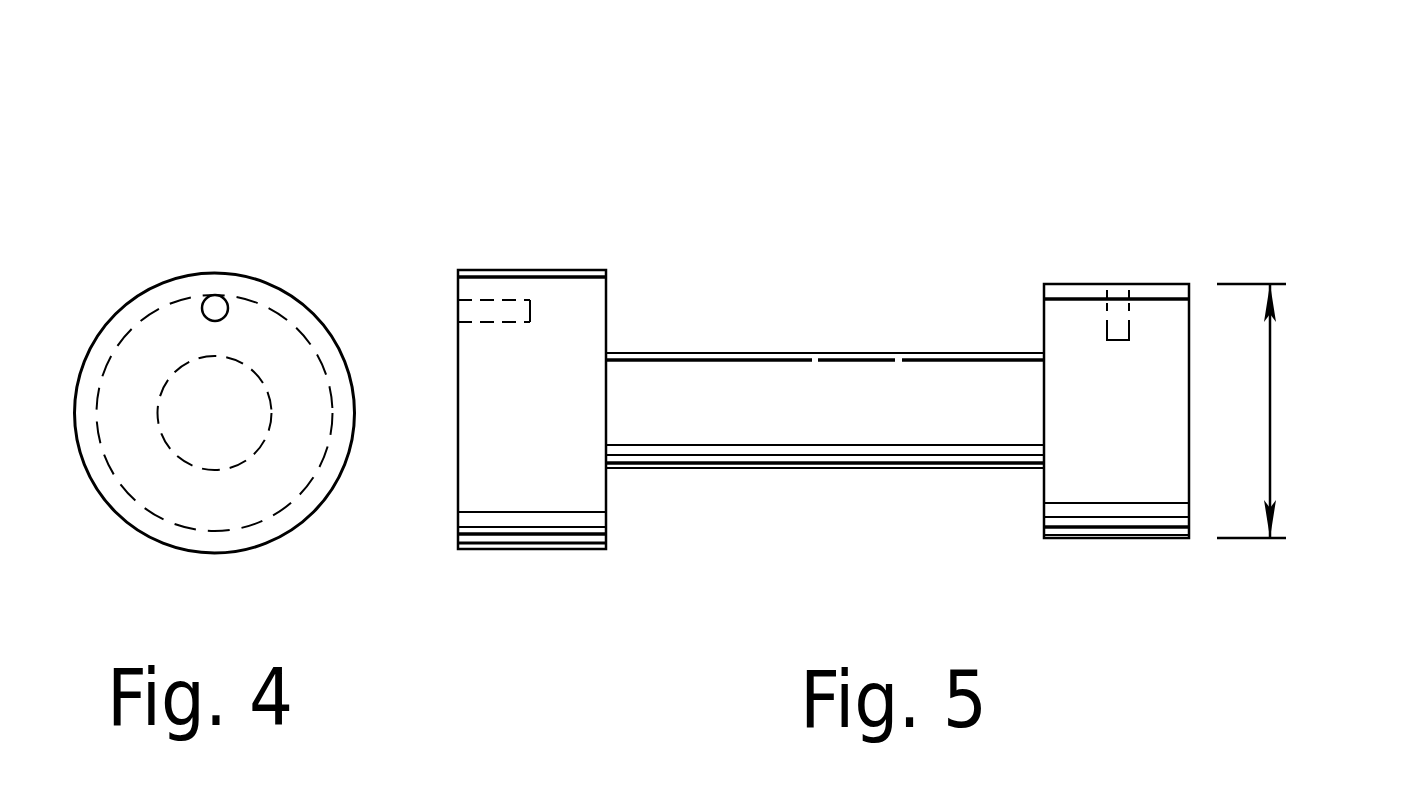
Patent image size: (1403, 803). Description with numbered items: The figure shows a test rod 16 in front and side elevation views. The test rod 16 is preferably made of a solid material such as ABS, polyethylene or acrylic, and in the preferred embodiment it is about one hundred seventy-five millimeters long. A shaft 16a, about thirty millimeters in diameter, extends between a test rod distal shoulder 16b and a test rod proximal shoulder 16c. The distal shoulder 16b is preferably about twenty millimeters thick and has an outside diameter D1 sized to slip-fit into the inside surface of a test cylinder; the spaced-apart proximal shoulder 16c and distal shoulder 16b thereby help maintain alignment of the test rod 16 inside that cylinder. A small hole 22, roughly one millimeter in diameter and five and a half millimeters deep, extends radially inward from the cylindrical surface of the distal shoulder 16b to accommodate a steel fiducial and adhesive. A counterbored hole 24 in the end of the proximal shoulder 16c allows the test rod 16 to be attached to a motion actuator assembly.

In FIG. 4, the test rod 16 is at (213, 301).
In FIG. 5, the test rod 16 is at (852, 400).
In FIG. 5, the shaft 16a is at (825, 410).
In FIG. 5, the test rod distal shoulder 16b is at (1116, 411).
In FIG. 4, the test rod proximal shoulder 16c is at (215, 413).
In FIG. 5, the test rod proximal shoulder 16c is at (532, 409).
In FIG. 5, the hole 22 is at (458, 311).
In FIG. 4, the counterbored hole 24 is at (214, 300).
In FIG. 5, the outside diameter D1 is at (1270, 383).